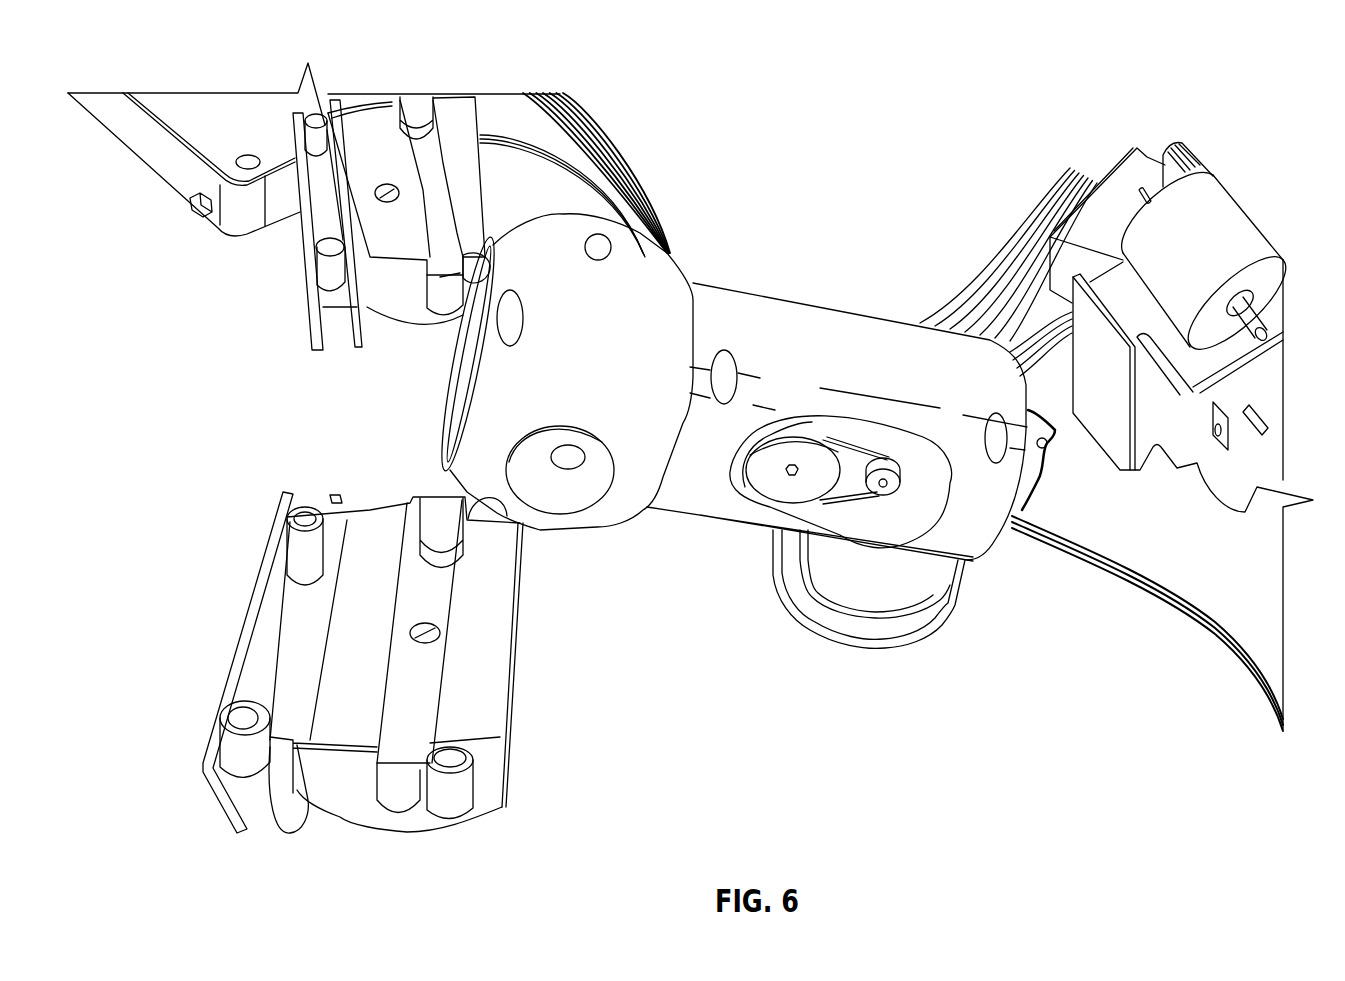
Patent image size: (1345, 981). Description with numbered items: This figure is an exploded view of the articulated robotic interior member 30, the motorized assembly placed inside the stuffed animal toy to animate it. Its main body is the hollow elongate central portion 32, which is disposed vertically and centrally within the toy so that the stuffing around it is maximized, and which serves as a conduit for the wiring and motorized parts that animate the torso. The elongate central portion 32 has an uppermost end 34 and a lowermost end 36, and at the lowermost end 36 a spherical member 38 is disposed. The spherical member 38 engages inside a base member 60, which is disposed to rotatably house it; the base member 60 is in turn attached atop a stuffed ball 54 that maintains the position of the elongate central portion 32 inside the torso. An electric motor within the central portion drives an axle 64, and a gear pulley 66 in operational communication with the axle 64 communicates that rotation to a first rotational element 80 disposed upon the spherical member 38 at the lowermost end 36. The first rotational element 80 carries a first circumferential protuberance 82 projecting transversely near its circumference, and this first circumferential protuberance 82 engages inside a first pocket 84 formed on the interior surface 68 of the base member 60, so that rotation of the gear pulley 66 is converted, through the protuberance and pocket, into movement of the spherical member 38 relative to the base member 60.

The articulated robotic interior member 30 is at (1152, 81).
The hollow elongate central portion 32 is at (845, 342).
The uppermost end 34 is at (1025, 497).
The lowermost end 36 is at (663, 485).
The spherical member 38 is at (672, 272).
The stuffed ball 54 is at (382, 192).
The base member 60 is at (490, 770).
The axle 64 is at (884, 494).
The gear pulley 66 is at (850, 515).
The interior surface 68 is at (492, 580).
The first rotational element 80 is at (600, 440).
The first circumferential protuberance 82 is at (572, 467).
The first pocket 84 is at (430, 633).